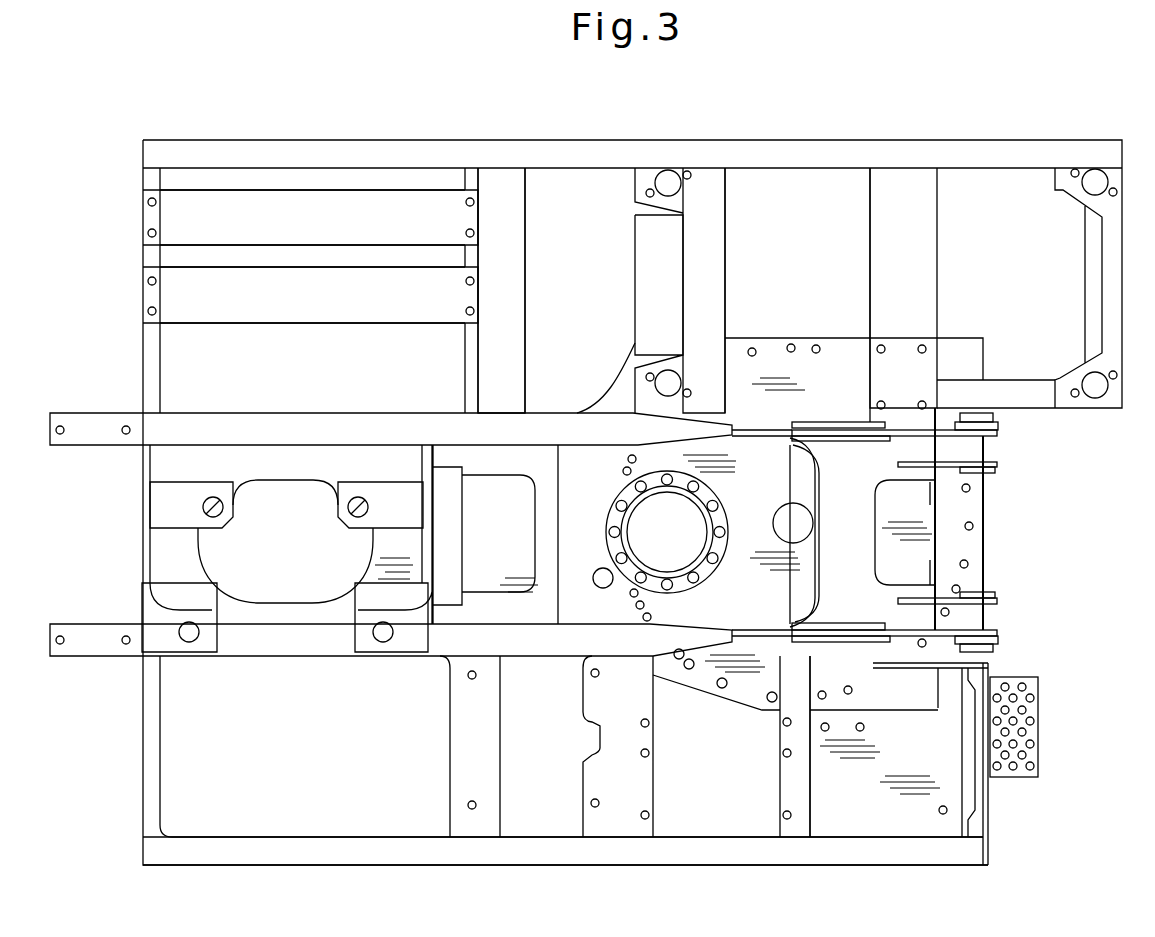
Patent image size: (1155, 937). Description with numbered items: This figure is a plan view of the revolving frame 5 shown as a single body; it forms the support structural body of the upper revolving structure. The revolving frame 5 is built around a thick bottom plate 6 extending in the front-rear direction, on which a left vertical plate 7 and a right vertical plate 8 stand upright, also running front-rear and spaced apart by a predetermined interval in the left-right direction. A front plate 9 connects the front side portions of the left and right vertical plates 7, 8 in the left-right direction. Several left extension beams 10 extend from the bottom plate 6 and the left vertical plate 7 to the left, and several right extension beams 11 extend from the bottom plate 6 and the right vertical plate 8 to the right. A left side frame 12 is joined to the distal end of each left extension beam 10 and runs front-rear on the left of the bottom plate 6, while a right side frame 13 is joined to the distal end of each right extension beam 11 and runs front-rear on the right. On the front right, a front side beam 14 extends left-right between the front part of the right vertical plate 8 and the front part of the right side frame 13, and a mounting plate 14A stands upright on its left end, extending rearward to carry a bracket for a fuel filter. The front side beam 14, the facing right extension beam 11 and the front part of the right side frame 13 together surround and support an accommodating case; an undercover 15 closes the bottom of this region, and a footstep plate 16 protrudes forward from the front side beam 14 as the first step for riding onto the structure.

The revolving frame 5 is at (803, 140).
The bottom plate 6 is at (583, 486).
The left vertical plate 7 is at (905, 433).
The right vertical plate 8 is at (890, 633).
The front plate 9 is at (840, 495).
The left extension beam 10 is at (498, 196).
The right extension beam 11 is at (479, 800).
The left side frame 12 is at (585, 152).
The right side frame 13 is at (557, 850).
The front side beam 14 is at (978, 818).
The mounting plate 14A is at (917, 668).
The undercover 15 is at (865, 800).
The footstep plate 16 is at (1036, 733).